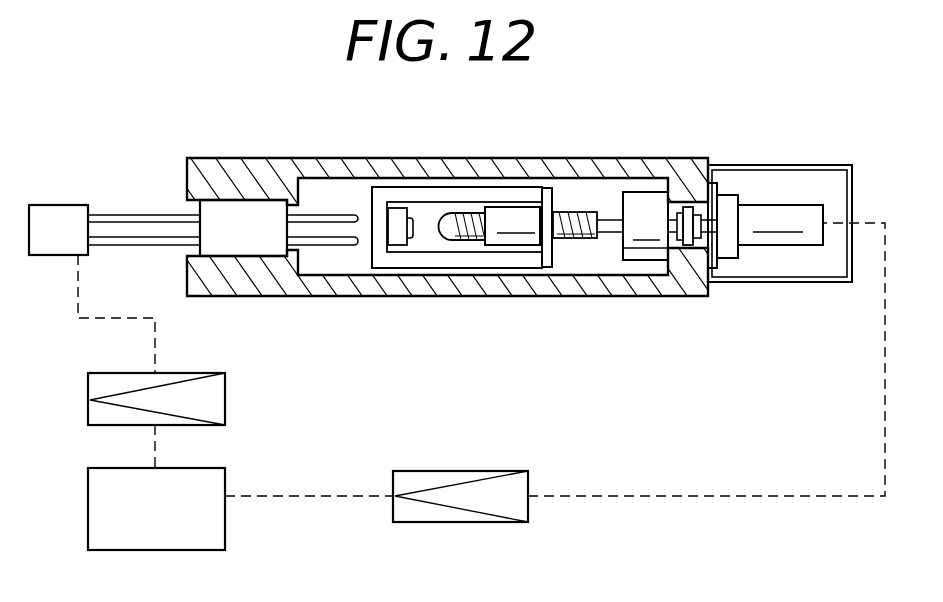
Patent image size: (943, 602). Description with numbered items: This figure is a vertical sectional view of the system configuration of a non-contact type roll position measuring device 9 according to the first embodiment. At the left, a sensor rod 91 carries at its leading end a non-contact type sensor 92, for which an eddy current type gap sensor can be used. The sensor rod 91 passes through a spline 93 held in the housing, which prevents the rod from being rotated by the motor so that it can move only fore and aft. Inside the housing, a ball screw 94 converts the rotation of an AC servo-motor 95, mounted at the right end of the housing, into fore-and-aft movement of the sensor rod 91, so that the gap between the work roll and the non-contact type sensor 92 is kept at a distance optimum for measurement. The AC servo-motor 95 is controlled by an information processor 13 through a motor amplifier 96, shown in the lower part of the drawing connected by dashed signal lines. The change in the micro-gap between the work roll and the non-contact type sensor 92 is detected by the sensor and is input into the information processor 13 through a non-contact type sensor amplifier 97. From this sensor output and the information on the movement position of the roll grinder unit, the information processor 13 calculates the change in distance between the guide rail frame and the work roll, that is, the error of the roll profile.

The non-contact type roll position measuring device 9 is at (494, 140).
The information processor 13 is at (88, 480).
The sensor rod 91 is at (144, 213).
The non-contact type sensor 92 is at (57, 205).
The spline 93 is at (249, 212).
The ball screw 94 is at (520, 240).
The AC servo-motor 95 is at (783, 215).
The motor amplifier 96 is at (505, 471).
The non-contact type sensor amplifier 97 is at (88, 388).